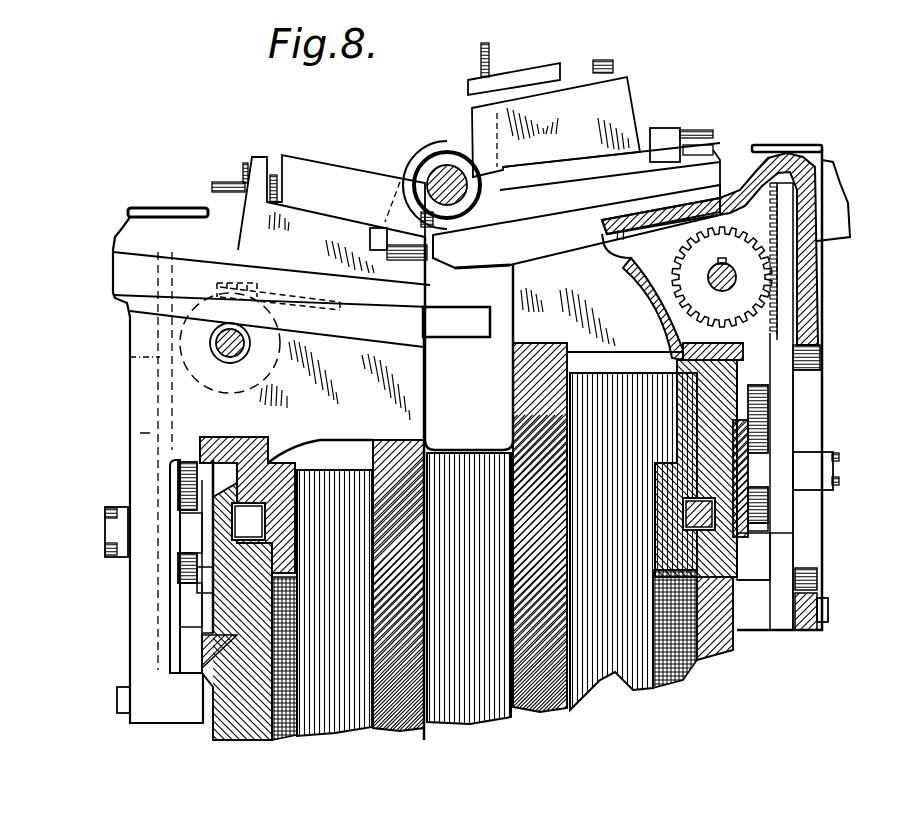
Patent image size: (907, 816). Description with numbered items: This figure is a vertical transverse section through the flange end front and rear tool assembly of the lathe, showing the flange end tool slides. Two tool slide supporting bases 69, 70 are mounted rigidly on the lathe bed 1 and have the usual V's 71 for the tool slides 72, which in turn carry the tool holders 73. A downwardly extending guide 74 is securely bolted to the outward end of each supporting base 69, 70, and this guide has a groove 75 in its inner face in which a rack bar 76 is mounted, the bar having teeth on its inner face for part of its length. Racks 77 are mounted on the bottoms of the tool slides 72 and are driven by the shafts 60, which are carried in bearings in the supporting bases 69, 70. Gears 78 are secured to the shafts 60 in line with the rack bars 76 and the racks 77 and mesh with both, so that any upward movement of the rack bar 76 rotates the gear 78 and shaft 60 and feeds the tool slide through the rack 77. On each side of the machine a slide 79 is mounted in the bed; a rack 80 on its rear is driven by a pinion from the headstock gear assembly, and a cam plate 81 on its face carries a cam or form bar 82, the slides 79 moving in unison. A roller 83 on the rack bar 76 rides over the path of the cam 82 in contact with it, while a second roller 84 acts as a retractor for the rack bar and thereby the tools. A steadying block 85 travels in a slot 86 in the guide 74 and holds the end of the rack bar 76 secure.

The lathe bed 1 is at (690, 668).
The shaft 60 is at (220, 347).
The tool slide supporting base 69 is at (410, 409).
The tool slide supporting base 70 is at (543, 322).
The V's 71 is at (483, 264).
The tool slide 72 is at (245, 265).
The tool holder 73 is at (318, 212).
The guide 74 is at (143, 455).
The groove 75 is at (150, 362).
The rack bar 76 is at (167, 408).
The rack 77 is at (316, 296).
The gear 78 is at (243, 368).
The slide 79 is at (223, 595).
The rack 80 is at (263, 523).
The cam plate 81 is at (203, 587).
The cam or form bar 82 is at (197, 523).
The roller 83 is at (177, 483).
The second roller 84 is at (177, 577).
The steadying block 85 is at (120, 532).
The slot 86 is at (140, 435).